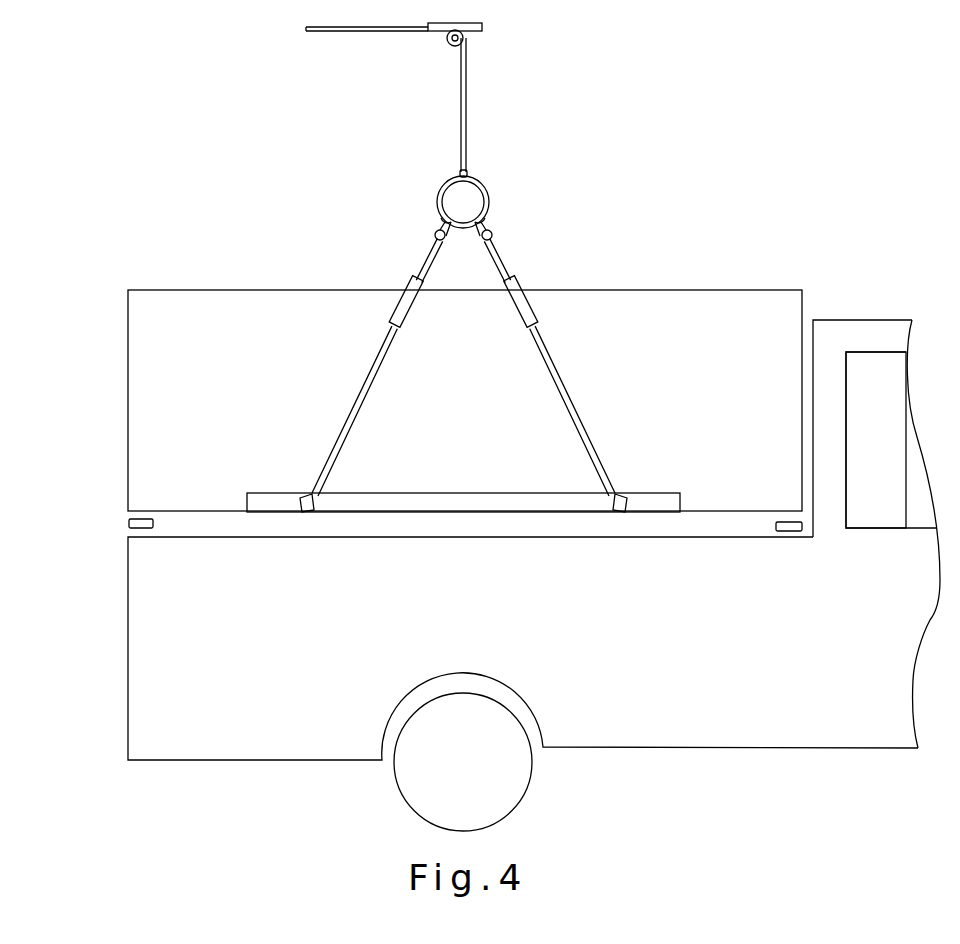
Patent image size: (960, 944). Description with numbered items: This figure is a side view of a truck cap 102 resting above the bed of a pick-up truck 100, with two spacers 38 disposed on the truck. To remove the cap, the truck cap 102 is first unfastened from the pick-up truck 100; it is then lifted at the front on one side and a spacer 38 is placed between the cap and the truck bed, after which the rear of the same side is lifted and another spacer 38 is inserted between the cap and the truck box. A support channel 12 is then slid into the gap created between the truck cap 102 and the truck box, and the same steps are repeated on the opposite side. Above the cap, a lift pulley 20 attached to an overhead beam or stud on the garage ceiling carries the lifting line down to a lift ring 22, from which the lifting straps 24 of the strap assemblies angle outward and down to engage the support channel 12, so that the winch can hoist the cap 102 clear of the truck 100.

The pick-up truck 100 is at (127, 659).
The truck cap 102 is at (253, 288).
The support channel 12 is at (468, 493).
The spacer 38 is at (126, 521).
The lift pulley 20 is at (447, 45).
The lift ring 22 is at (438, 190).
The lifting strap 24 is at (572, 387).